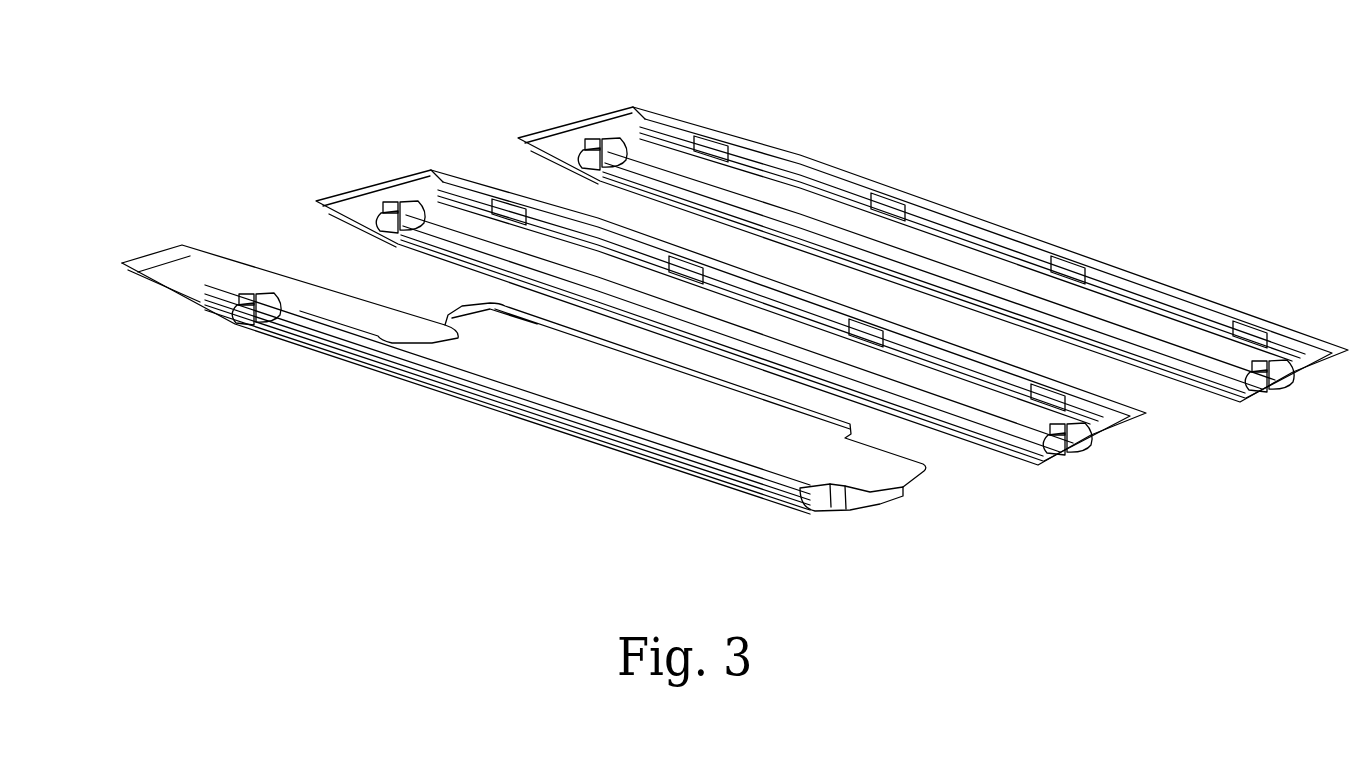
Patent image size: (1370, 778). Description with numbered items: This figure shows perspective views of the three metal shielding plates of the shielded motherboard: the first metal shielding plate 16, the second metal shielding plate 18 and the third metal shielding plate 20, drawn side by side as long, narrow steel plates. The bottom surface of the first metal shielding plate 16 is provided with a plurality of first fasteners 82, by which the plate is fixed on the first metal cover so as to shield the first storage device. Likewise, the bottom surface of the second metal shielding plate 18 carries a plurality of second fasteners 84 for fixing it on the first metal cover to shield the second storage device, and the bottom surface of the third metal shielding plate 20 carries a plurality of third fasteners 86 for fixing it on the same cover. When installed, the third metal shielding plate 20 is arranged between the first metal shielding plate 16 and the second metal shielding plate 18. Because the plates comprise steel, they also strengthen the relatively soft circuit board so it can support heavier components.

The first metal shielding plate 16 is at (873, 477).
The second metal shielding plate 18 is at (1093, 417).
The third metal shielding plate 20 is at (1293, 352).
The first fasteners 82 is at (237, 317).
The second fasteners 84 is at (415, 217).
The third fasteners 86 is at (617, 157).